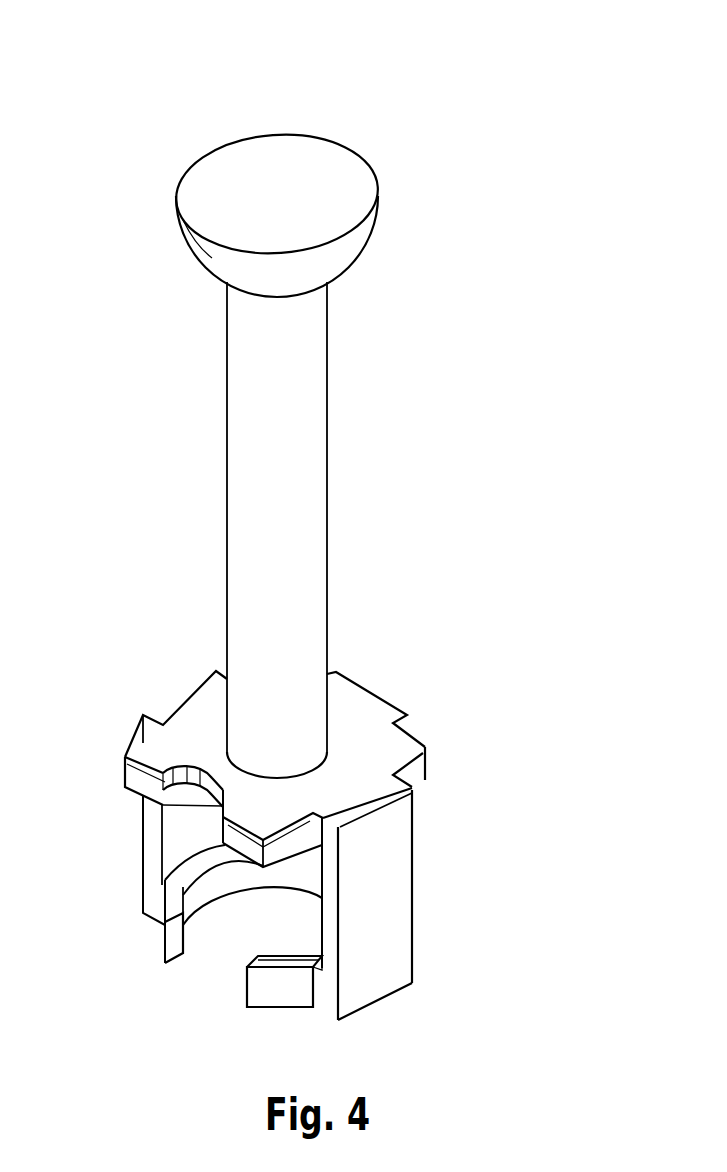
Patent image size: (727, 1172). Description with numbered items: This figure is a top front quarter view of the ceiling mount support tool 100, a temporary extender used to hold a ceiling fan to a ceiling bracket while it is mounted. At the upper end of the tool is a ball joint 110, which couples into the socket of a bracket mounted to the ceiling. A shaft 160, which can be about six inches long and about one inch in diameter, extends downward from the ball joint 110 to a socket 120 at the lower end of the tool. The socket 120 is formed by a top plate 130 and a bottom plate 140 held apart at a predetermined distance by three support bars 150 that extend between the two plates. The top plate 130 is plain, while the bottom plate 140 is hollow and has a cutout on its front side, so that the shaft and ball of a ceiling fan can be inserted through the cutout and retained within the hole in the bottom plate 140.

The ceiling mount support tool 100 is at (489, 135).
The ball joint 110 is at (200, 197).
The shaft 160 is at (291, 412).
The socket 120 is at (476, 680).
The top plate 130 is at (173, 708).
The bottom plate 140 is at (160, 942).
The support bars 150 is at (386, 970).